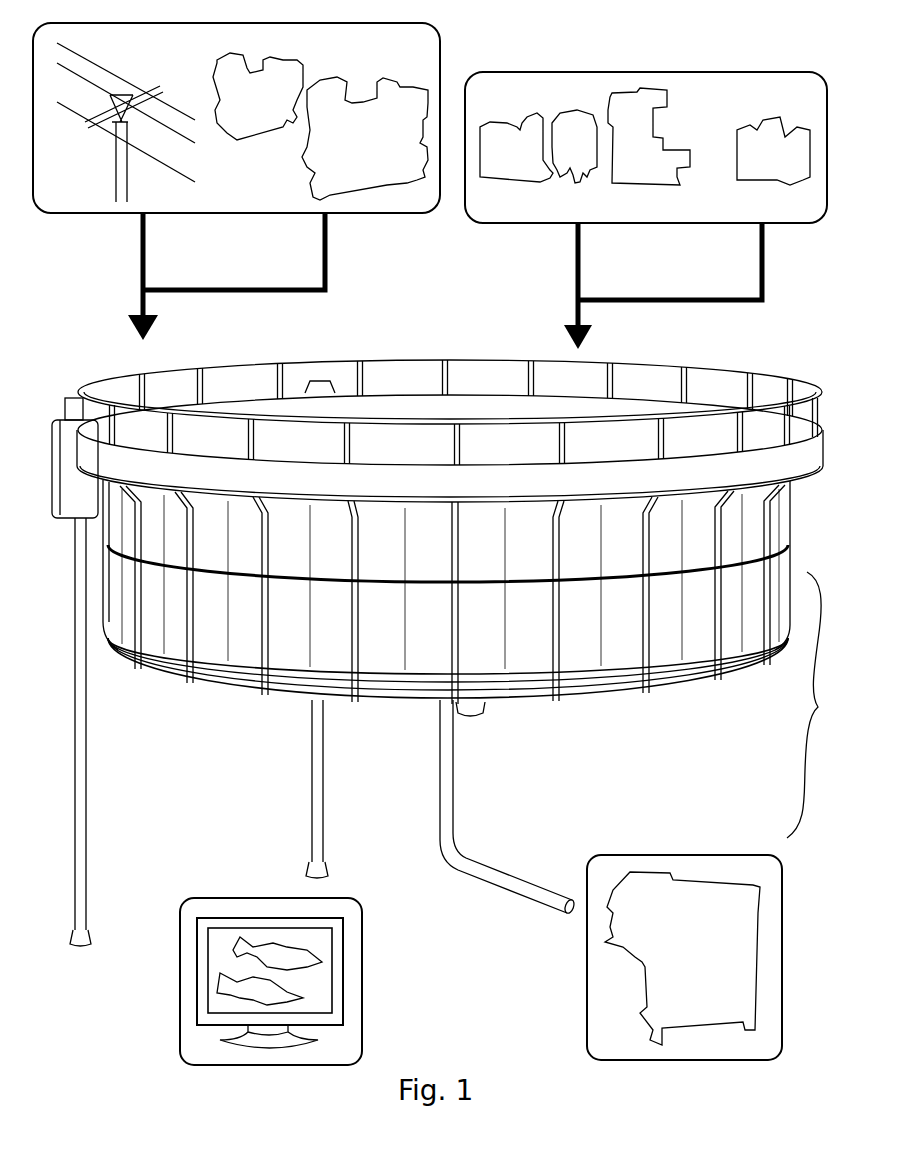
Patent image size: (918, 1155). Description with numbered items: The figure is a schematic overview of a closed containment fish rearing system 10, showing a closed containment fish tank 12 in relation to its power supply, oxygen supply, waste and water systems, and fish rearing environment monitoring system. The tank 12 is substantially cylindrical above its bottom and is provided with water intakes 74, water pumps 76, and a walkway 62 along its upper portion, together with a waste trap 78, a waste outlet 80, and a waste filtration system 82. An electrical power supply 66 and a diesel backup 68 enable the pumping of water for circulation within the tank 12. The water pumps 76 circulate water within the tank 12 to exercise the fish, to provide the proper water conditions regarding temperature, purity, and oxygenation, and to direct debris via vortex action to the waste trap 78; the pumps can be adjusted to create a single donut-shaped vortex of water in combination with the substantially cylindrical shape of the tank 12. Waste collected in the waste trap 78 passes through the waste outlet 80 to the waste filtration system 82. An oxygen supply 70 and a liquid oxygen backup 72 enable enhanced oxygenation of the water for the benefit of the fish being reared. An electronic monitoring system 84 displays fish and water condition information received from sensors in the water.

The fish processing system 10 is at (822, 705).
The closed containment fish tank 12 is at (539, 606).
The walkway 62 is at (496, 375).
The electrical power supply 66 is at (114, 222).
The diesel backup 68 is at (344, 200).
The oxygen supply 70 is at (539, 227).
The liquid oxygen backup 72 is at (790, 173).
The water intakes 74 is at (90, 926).
The water pumps 76 is at (88, 400).
The waste trap 78 is at (469, 719).
The waste outlet 80 is at (489, 899).
The waste filtration system 82 is at (582, 1000).
The monitoring system 84 is at (176, 995).